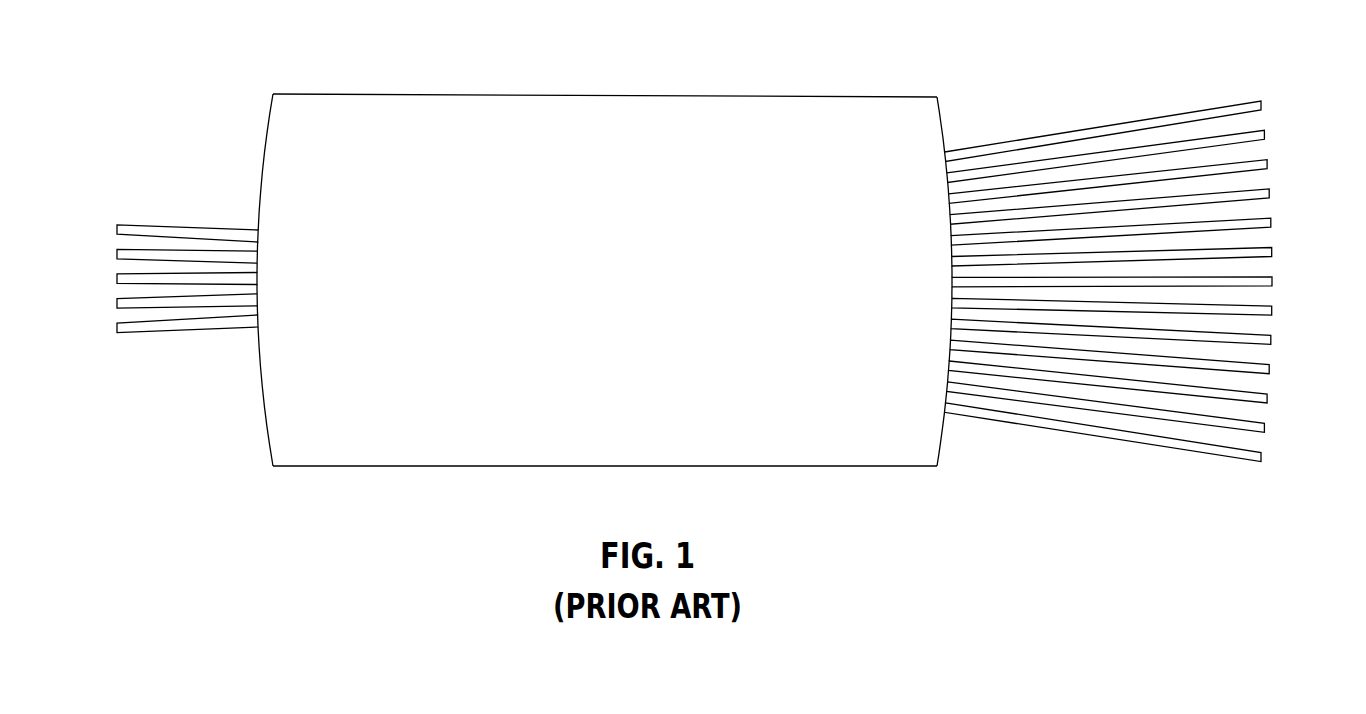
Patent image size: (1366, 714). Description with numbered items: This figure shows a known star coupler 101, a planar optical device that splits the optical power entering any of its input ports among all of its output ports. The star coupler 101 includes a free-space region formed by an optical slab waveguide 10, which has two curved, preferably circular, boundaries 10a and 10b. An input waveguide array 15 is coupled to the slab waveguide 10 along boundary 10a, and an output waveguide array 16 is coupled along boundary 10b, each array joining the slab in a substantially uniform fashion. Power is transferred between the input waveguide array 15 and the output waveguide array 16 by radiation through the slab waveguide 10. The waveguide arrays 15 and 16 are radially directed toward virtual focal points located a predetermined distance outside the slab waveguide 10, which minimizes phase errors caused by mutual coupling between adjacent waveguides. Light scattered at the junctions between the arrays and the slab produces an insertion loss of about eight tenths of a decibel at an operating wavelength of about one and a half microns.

The star coupler 101 is at (249, 87).
The optical slab waveguide 10 is at (624, 293).
The curved boundary 10a is at (258, 358).
The curved boundary 10b is at (941, 437).
The input waveguide array 15 is at (112, 213).
The output waveguide array 16 is at (1280, 93).